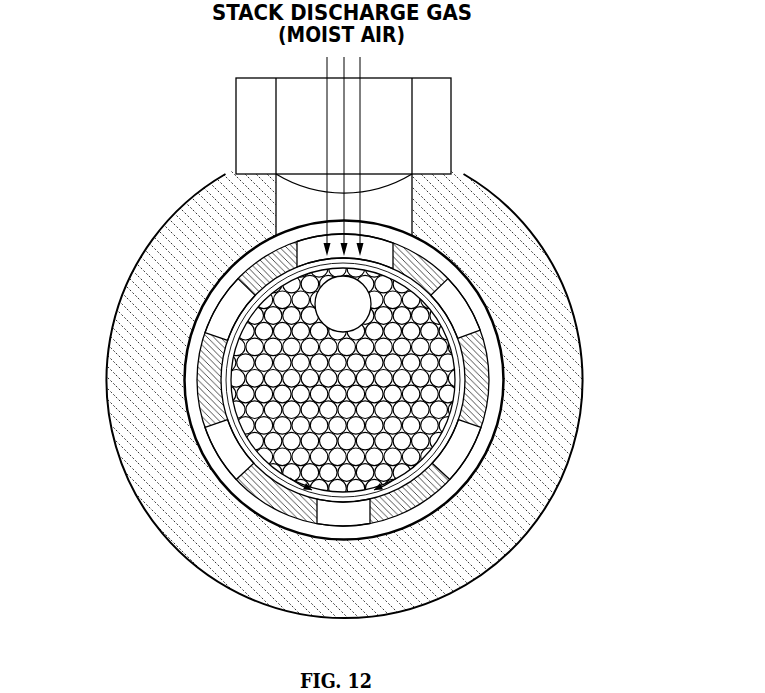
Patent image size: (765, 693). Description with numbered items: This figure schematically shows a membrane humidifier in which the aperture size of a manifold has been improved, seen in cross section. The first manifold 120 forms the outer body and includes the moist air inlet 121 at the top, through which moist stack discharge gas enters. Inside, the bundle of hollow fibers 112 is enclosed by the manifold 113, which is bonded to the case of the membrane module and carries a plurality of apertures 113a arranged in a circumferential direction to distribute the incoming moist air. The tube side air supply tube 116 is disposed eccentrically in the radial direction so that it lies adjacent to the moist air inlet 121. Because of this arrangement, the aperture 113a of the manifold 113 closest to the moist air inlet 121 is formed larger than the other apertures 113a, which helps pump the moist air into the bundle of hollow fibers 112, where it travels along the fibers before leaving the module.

The hollow fibers 112 is at (252, 378).
The manifold 113 is at (442, 248).
The aperture 113a is at (462, 310).
The tube side air supply tube 116 is at (233, 287).
The first manifold 120 is at (213, 182).
The moist air inlet 121 is at (452, 120).